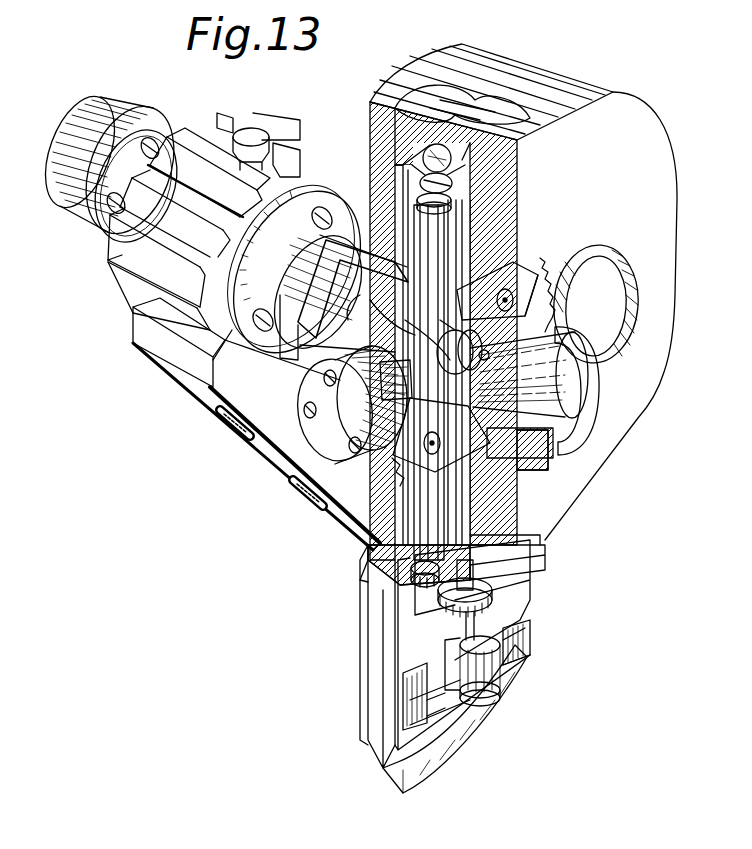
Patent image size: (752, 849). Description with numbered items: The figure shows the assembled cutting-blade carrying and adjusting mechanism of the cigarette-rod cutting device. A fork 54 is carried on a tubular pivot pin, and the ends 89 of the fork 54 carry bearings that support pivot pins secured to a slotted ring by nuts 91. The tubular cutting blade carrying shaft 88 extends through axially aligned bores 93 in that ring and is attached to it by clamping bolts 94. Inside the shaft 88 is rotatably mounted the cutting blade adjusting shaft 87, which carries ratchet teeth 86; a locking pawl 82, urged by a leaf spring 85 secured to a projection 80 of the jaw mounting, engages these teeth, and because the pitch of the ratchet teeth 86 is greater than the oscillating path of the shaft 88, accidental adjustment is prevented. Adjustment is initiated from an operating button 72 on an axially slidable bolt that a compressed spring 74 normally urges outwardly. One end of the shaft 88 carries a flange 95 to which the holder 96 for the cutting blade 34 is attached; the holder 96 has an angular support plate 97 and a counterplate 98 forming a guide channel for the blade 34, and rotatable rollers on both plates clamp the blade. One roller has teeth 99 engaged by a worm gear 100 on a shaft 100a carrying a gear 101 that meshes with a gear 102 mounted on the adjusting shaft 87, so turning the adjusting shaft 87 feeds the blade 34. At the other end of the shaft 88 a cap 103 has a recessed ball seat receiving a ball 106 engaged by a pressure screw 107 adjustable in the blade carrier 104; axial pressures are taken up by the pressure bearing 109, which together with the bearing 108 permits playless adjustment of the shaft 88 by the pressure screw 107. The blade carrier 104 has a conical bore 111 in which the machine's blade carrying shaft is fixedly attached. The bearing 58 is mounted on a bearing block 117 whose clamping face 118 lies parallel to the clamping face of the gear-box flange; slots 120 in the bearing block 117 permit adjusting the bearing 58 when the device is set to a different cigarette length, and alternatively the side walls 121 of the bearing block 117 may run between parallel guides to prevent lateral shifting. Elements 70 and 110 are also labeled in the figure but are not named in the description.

The cutting blade 34 is at (465, 735).
The fork 54 is at (292, 322).
The bearing 58 is at (205, 137).
The flange 70 is at (315, 185).
The operating button 72 is at (150, 105).
The compressed spring 74 is at (115, 225).
The projection 80 is at (352, 312).
The locking pawl 82 is at (405, 295).
The leaf spring 85 is at (385, 368).
The ratchet teeth 86 is at (465, 366).
The cutting blade adjusting shaft 87 is at (410, 528).
The tubular cutting blade carrying shaft 88 is at (400, 275).
The ends of the fork 89 is at (340, 440).
The nuts 91 is at (555, 395).
The bores 93 is at (465, 367).
The clamping bolts 94 is at (540, 280).
The flange 95 is at (535, 555).
The holder 96 is at (540, 540).
The angular support plate 97 is at (398, 640).
The counterplate 98 is at (368, 613).
The teeth 99 is at (448, 662).
The worm gear 100 is at (500, 692).
The shaft 100a is at (500, 612).
The gear 101 is at (495, 598).
The gear 102 is at (423, 588).
The cap 103 is at (455, 180).
The blade carrier 104 is at (622, 98).
The ball 106 is at (452, 152).
The pressure screw 107 is at (470, 108).
The bearing 108 is at (505, 218).
The pressure bearing 109 is at (475, 492).
The projection 110 is at (475, 470).
The conical bore 111 is at (575, 400).
The bearing block 117 is at (133, 325).
The clamping face 118 is at (275, 452).
The slots 120 is at (222, 428).
The side walls 121 is at (276, 358).